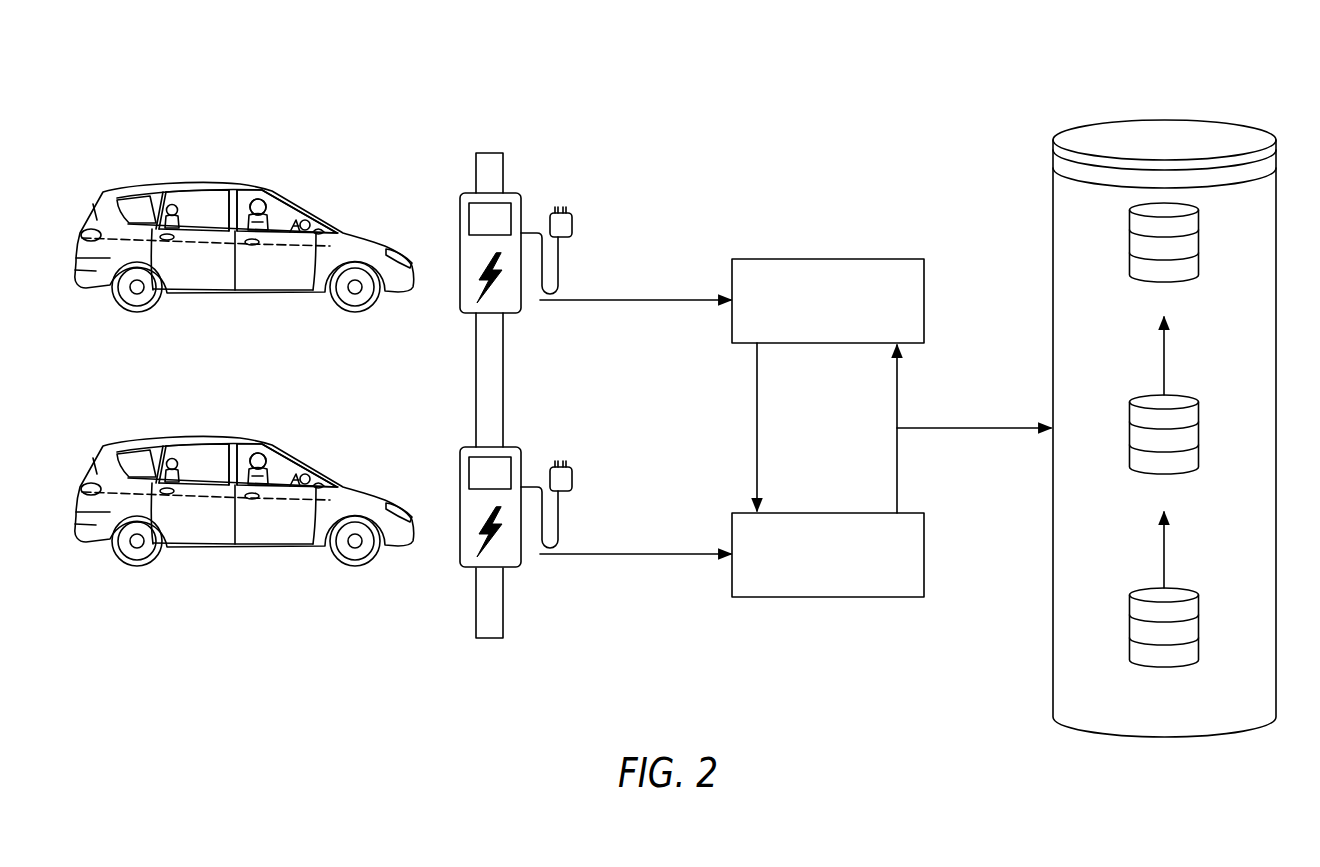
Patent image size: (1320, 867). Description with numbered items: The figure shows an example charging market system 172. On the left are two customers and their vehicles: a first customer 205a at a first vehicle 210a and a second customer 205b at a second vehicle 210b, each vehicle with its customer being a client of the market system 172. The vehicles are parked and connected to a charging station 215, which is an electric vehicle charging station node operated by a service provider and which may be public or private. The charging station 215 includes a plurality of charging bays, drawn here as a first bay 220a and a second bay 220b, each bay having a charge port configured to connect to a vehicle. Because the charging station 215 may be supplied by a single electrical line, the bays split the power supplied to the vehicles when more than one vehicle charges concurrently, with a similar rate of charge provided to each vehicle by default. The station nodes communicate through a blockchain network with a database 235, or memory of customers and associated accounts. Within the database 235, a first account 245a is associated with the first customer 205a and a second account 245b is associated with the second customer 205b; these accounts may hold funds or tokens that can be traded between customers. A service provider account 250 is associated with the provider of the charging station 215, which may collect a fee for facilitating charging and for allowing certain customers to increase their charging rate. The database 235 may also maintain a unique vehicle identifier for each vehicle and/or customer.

The charging market system 172 is at (386, 80).
The first vehicle 210a is at (157, 184).
The second vehicle 210b is at (157, 438).
The first customer 205a is at (259, 198).
The second customer 205b is at (259, 452).
The charging station 215 is at (493, 152).
The first bay 220a is at (513, 193).
The second bay 220b is at (513, 447).
The database 235 is at (1090, 124).
The service provider account 250 is at (1200, 230).
The first account 245a is at (1200, 422).
The second account 245b is at (1200, 615).